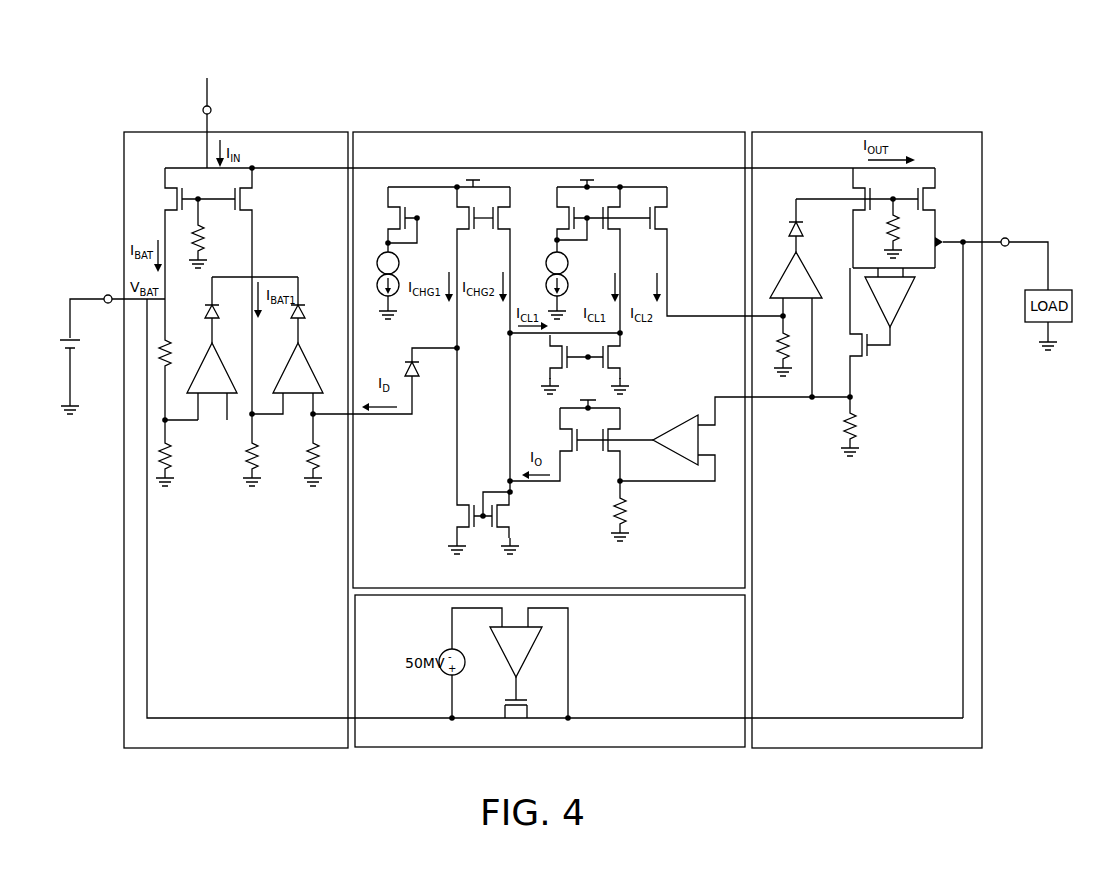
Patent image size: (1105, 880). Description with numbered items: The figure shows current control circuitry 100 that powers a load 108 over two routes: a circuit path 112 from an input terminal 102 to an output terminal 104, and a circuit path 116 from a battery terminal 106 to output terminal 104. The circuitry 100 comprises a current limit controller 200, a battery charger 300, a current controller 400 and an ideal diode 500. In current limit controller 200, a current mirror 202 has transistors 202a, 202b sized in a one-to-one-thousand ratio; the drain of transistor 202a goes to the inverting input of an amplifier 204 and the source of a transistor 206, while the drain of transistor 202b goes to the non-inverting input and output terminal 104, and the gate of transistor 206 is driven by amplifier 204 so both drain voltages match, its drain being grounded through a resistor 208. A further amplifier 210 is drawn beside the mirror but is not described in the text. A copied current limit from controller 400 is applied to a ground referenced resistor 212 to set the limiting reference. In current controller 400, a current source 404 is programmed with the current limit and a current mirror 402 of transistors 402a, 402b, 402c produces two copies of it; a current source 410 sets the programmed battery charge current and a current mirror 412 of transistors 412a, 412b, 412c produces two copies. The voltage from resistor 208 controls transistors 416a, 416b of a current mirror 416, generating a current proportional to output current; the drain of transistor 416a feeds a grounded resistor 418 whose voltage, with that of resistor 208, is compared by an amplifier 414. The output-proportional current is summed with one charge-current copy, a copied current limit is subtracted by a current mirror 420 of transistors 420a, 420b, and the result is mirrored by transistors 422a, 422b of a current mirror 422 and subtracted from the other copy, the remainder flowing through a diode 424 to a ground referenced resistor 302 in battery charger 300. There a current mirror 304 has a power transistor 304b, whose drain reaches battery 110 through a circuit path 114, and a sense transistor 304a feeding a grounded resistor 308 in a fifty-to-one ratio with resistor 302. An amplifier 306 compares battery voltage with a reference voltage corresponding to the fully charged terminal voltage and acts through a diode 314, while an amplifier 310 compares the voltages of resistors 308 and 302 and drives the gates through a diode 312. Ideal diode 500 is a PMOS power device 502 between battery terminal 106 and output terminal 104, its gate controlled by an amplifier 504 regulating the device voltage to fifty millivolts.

The current control circuitry 100 is at (518, 88).
The input terminal 102 is at (202, 108).
The output terminal 104 is at (1006, 236).
The battery terminal 106 is at (104, 296).
The load 108 is at (1063, 325).
The battery 110 is at (74, 352).
The circuit path 112 is at (710, 130).
The circuit path 114 is at (165, 232).
The circuit path 116 is at (858, 712).
The current limit controller 200 is at (786, 130).
The current mirror 202 is at (889, 182).
The transistor 202a is at (855, 165).
The transistor 202b is at (930, 165).
The amplifier 204 is at (905, 325).
The transistor 206 is at (862, 358).
The resistor 208 is at (858, 418).
The amplifier 210 is at (783, 277).
The ground referenced resistor 212 is at (778, 344).
The battery charger 300 is at (280, 130).
The ground referenced resistor 302 is at (317, 468).
The current mirror 304 is at (237, 277).
The transistor 304a is at (256, 168).
The transistor 304b is at (178, 180).
The amplifier 306 is at (227, 356).
The grounded resistor 308 is at (250, 468).
The amplifier 310 is at (315, 364).
The diode 312 is at (303, 310).
The diode 314 is at (205, 311).
The current controller 400 is at (633, 130).
The current mirror 402 is at (656, 238).
The transistor 402a is at (560, 182).
The transistor 402b is at (605, 182).
The transistor 402c is at (655, 182).
The current source 404 is at (547, 273).
The current source 410 is at (383, 296).
The current mirror 412 is at (449, 318).
The transistor 412a is at (392, 182).
The transistor 412b is at (458, 182).
The transistor 412c is at (500, 182).
The amplifier 414 is at (700, 410).
The current mirror 416 is at (578, 432).
The transistor 416a is at (617, 415).
The transistor 416b is at (568, 427).
The grounded resistor 418 is at (623, 500).
The current mirror 420 is at (600, 370).
The transistor 420a is at (622, 352).
The transistor 420b is at (552, 355).
The current mirror 422 is at (483, 536).
The transistor 422a is at (505, 521).
The transistor 422b is at (460, 521).
The diode 424 is at (422, 374).
The ideal diode 500 is at (660, 748).
The PMOS power device 502 is at (528, 703).
The amplifier 504 is at (536, 639).